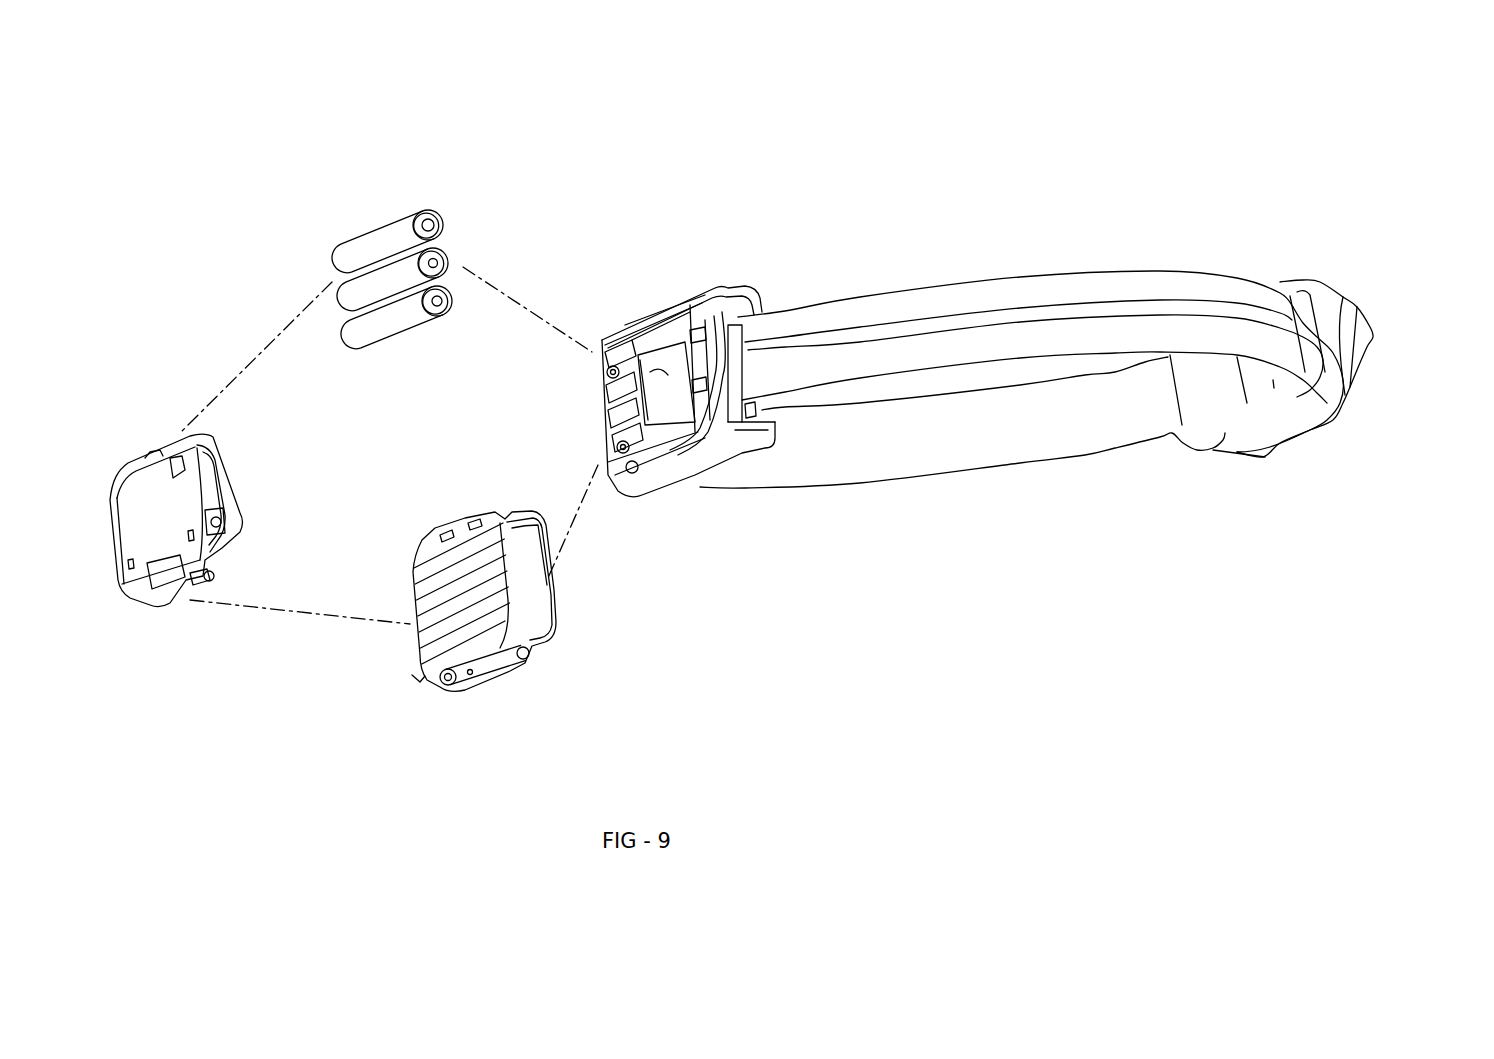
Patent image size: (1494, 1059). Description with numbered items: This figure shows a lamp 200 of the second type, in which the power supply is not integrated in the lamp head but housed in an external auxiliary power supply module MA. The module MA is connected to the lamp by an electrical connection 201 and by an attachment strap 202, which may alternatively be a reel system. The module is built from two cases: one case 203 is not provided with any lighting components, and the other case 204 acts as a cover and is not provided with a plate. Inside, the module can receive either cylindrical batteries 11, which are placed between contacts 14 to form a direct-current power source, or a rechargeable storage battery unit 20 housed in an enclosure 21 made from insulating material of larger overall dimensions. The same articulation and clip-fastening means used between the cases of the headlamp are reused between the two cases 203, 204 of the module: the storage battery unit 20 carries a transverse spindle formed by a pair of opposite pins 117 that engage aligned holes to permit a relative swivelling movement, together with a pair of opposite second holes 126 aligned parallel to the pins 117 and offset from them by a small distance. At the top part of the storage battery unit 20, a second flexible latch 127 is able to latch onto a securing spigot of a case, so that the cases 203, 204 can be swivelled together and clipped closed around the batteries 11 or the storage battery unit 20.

The external auxiliary power supply module MA is at (592, 220).
The batteries 11 is at (383, 235).
The contacts 14 is at (604, 356).
The storage battery unit 20 is at (573, 653).
The enclosure 21 is at (555, 592).
The pins 117 is at (523, 653).
The second holes 126 is at (442, 680).
The second flexible latch 127 is at (410, 583).
The lamp 200 is at (1302, 483).
The electrical connection 201 is at (922, 317).
The attachment strap 202 is at (1125, 338).
The case 203 is at (750, 440).
The case 204 is at (148, 522).